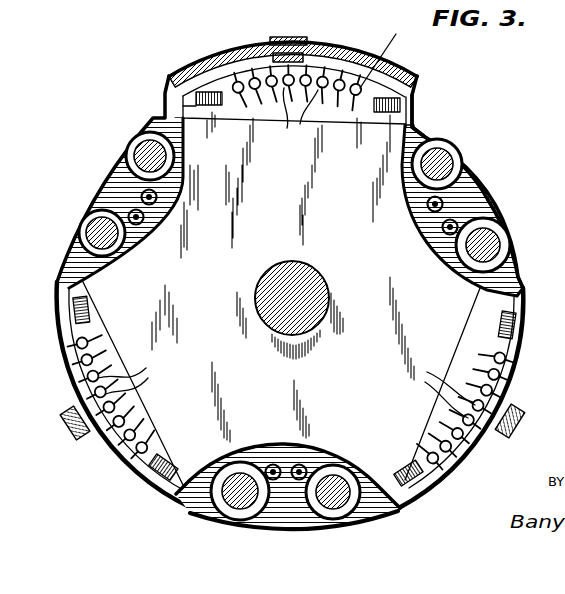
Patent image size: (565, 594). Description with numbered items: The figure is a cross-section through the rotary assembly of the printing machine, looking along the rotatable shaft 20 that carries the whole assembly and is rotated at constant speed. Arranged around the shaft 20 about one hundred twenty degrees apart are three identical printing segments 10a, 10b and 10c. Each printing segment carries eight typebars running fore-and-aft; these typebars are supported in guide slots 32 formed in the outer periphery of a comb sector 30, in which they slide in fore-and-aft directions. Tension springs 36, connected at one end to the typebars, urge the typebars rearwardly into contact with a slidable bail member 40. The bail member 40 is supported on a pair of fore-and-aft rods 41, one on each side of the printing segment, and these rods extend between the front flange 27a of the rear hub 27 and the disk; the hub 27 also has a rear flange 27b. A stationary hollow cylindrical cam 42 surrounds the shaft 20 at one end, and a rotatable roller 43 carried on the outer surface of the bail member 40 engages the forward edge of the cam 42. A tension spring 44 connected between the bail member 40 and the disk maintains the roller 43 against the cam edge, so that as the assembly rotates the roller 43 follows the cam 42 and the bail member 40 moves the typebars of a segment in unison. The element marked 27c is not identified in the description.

The printing segment 10a is at (347, 84).
The printing segment 10b is at (445, 466).
The printing segment 10c is at (84, 376).
The shaft 20 is at (308, 276).
The rear hub 27 is at (462, 232).
The front flange 27a is at (428, 130).
The rear flange 27b is at (519, 266).
The bottom flange lobe 27c is at (196, 500).
The comb sector 30 is at (326, 122).
The guide slot 32 is at (286, 253).
The tension spring 36 is at (254, 82).
The slidable bail member 40 is at (416, 92).
The fore-and-aft rod 41 is at (446, 158).
The cylindrical cam 42 is at (388, 50).
The roller 43 is at (306, 41).
The tension spring 44 is at (443, 204).